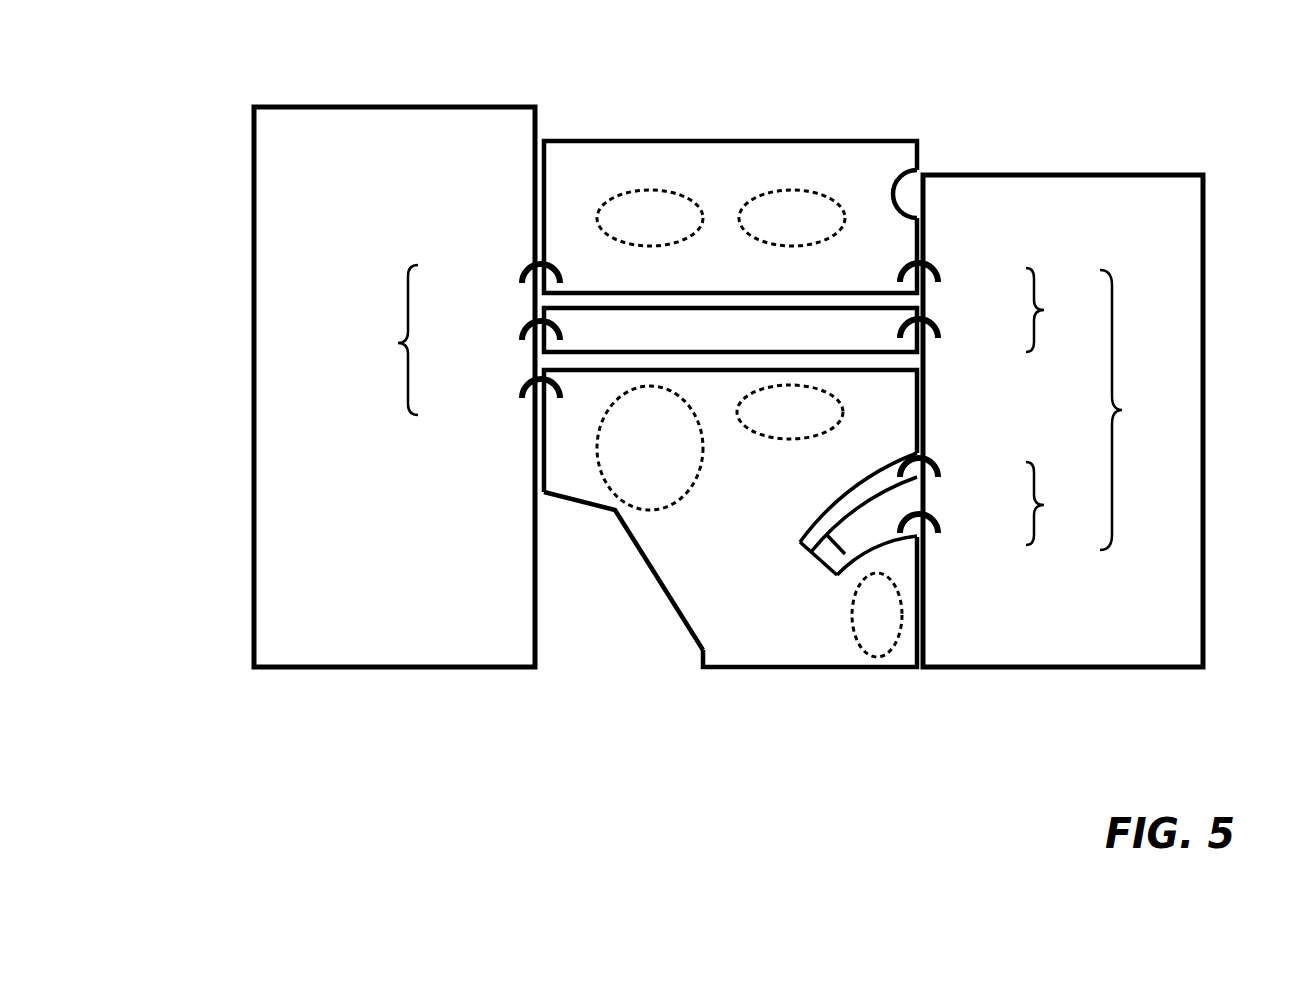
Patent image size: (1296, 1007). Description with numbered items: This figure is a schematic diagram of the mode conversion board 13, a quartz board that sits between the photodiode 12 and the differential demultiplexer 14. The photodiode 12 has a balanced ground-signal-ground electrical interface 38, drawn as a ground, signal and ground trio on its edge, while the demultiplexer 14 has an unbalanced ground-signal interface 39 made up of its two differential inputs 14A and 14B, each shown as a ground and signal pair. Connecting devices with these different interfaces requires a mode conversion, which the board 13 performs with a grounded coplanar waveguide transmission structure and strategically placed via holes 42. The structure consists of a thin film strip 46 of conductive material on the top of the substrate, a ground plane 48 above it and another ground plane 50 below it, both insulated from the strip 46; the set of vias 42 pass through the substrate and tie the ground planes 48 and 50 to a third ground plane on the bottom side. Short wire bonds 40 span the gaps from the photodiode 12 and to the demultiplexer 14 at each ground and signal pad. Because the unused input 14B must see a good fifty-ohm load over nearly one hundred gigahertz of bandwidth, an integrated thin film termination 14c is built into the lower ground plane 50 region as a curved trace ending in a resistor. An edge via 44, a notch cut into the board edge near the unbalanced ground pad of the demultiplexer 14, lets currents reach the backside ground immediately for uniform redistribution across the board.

The photodiode 12 is at (254, 635).
The mode converter board 13 is at (683, 570).
The differential demultiplexer 14 is at (1203, 612).
The demultiplexer input 14A is at (1020, 310).
The unused demultiplexer input 14B is at (1020, 503).
The 50-ohm termination 14c is at (818, 576).
The ground-signal-ground electrical interface 38 is at (432, 340).
The ground-signal interface 39 is at (1128, 410).
The wire bonds 40 is at (528, 268).
The via holes 42 is at (781, 188).
The edge via 44 is at (924, 172).
The thin film strip 46 is at (730, 330).
The ground plane 48 is at (730, 217).
The ground plane 50 is at (730, 518).